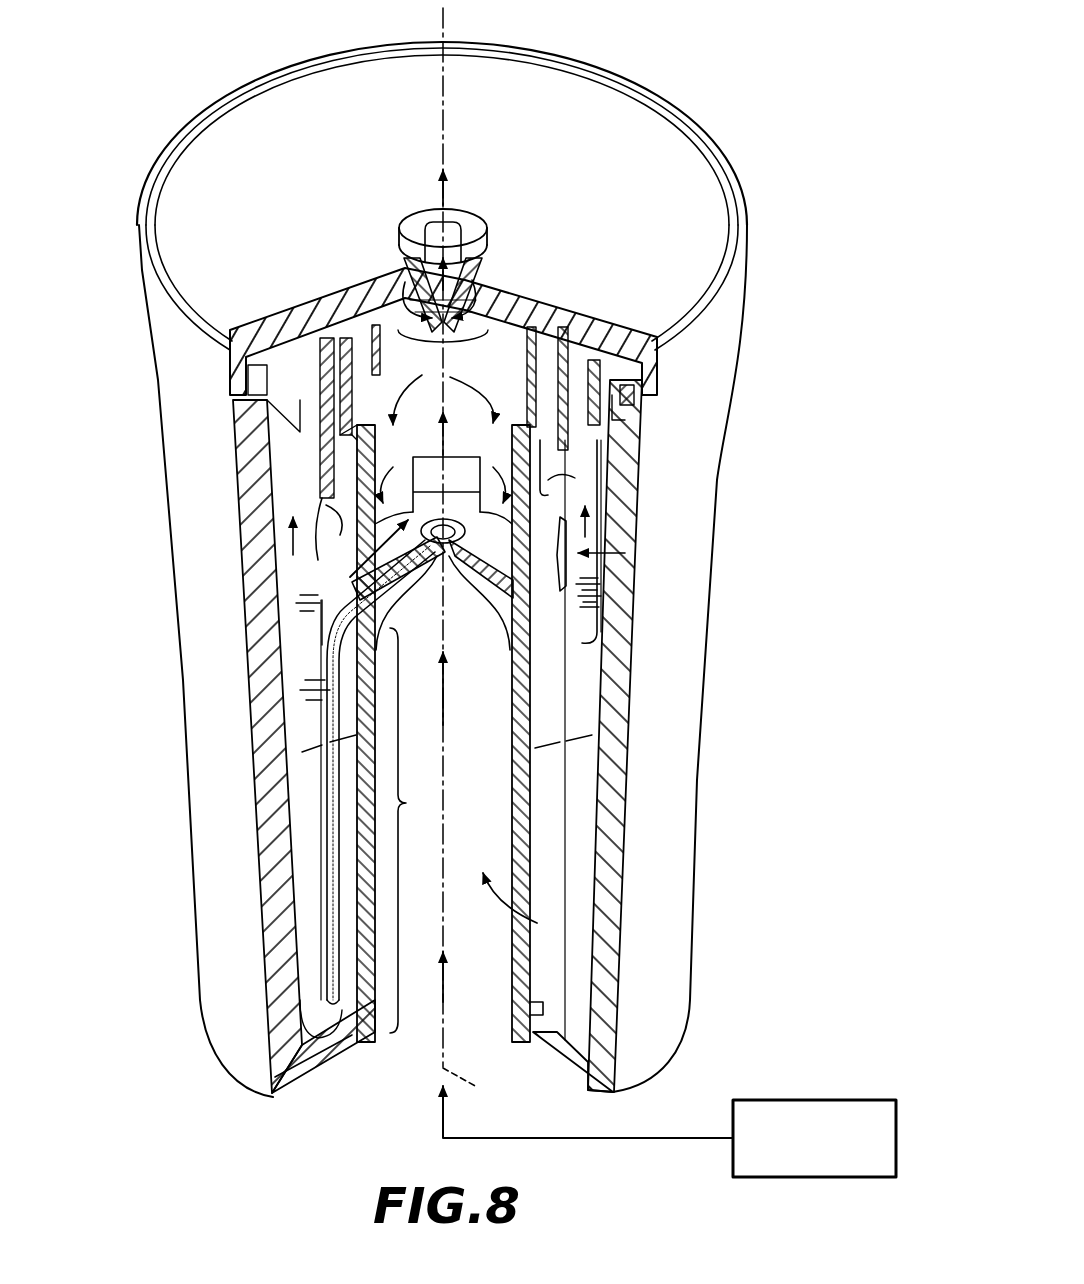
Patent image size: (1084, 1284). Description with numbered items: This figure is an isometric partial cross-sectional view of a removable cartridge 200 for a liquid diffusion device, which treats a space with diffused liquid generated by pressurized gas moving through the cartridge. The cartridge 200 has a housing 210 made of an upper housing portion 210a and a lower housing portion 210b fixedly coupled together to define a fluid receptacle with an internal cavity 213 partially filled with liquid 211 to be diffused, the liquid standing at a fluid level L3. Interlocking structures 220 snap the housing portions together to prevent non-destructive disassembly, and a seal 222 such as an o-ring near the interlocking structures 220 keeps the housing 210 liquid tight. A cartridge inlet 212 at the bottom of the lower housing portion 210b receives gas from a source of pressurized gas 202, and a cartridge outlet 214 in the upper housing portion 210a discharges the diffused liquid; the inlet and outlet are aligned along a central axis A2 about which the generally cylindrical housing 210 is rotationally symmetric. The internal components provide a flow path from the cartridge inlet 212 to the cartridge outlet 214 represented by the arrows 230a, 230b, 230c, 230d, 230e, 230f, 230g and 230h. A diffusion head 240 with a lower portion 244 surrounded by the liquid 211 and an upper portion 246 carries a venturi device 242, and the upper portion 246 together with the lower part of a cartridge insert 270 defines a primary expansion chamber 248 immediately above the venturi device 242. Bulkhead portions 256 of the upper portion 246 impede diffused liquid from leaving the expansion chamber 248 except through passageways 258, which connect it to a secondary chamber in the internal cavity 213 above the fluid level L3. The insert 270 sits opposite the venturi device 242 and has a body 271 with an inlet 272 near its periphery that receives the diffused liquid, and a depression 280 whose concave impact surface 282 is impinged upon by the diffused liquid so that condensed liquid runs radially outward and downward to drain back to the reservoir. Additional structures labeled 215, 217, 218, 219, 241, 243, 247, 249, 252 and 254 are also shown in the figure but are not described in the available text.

The removable cartridge 200 is at (697, 60).
The source of pressurized gas 202 is at (833, 1100).
The housing 210 is at (752, 128).
The upper housing portion 210a is at (705, 222).
The lower housing portion 210b is at (680, 597).
The liquid 211 is at (580, 838).
The cartridge inlet 212 is at (378, 1097).
The internal cavity 213 is at (293, 467).
The cartridge outlet 214 is at (455, 224).
The outlet nozzle 215 is at (447, 265).
The cap plate 217 is at (523, 310).
The bottom plate 218 is at (578, 1075).
The dip tube 219 is at (330, 853).
The interlocking structures 220 is at (612, 406).
The seal 222 is at (625, 385).
The flow path arrow 230a is at (456, 1012).
The flow path arrow 230b is at (443, 690).
The flow path arrow 230c is at (445, 466).
The flow path arrow 230d is at (410, 395).
The flow path arrow 230e is at (320, 561).
The flow path arrow 230f is at (545, 480).
The flow path arrow 230g is at (445, 300).
The flow path arrow 230h is at (435, 193).
The diffusion head 240 is at (550, 645).
The outer chamber 241 is at (268, 760).
The venturi device 242 is at (480, 543).
The bottom support 243 is at (355, 1000).
The lower portion of the diffusion head 244 is at (421, 830).
The upper portion of the diffusion head 246 is at (567, 540).
The nozzle 247 is at (456, 598).
The primary expansion chamber 248 is at (320, 613).
The tube inlet 249 is at (337, 603).
The gas passage 252 is at (510, 921).
The tube step 254 is at (522, 1032).
The bulkhead portions 256 is at (330, 510).
The passageways 258 is at (313, 581).
The cartridge insert 270 is at (590, 392).
The body 271 is at (570, 395).
The inlet of the insert 272 is at (555, 490).
The depression 280 is at (330, 498).
The impact surface 282 is at (320, 396).
The fluid level L3 is at (575, 730).
The central axis A2 is at (478, 1087).